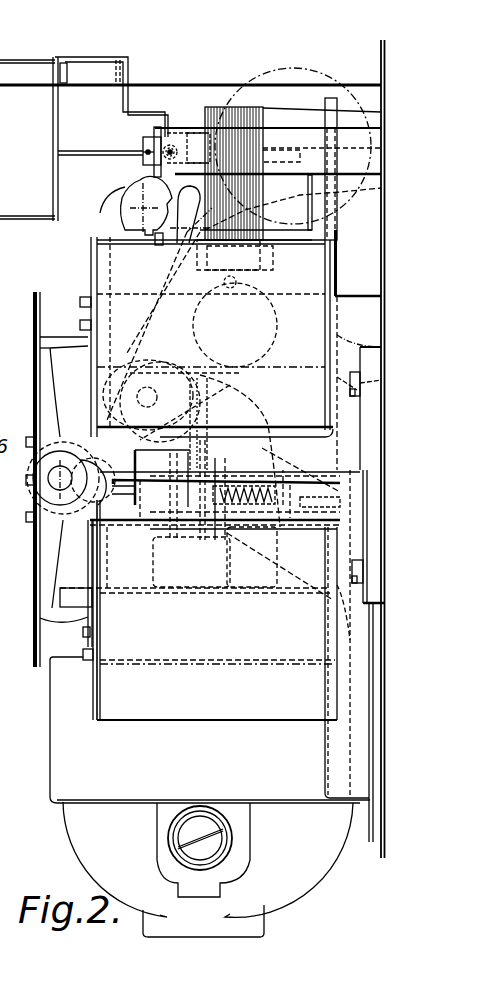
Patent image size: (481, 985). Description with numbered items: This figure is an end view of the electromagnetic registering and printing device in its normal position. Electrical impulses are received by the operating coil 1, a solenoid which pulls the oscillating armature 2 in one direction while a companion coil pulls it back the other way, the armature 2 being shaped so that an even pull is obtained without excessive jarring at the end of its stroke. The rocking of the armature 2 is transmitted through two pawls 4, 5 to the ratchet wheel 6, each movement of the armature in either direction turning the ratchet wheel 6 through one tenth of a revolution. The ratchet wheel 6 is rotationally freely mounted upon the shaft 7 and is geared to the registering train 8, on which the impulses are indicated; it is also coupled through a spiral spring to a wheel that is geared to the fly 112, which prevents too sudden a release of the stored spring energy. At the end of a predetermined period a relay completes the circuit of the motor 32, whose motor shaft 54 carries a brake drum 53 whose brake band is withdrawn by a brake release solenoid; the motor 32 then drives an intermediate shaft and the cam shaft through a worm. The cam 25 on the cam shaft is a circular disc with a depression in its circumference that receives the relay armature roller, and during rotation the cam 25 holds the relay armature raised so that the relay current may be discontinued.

The operating coil 1 is at (222, 536).
The oscillating armature 2 is at (45, 383).
The pawl 4 is at (112, 210).
The pawl 5 is at (162, 258).
The ratchet wheel 6 is at (134, 183).
The shaft 7 is at (141, 209).
The registering train 8 is at (92, 139).
The cam 25 is at (262, 314).
The motor 32 is at (210, 840).
The brake drum 53 is at (300, 470).
The motor shaft 54 is at (207, 410).
The fly 112 is at (282, 62).